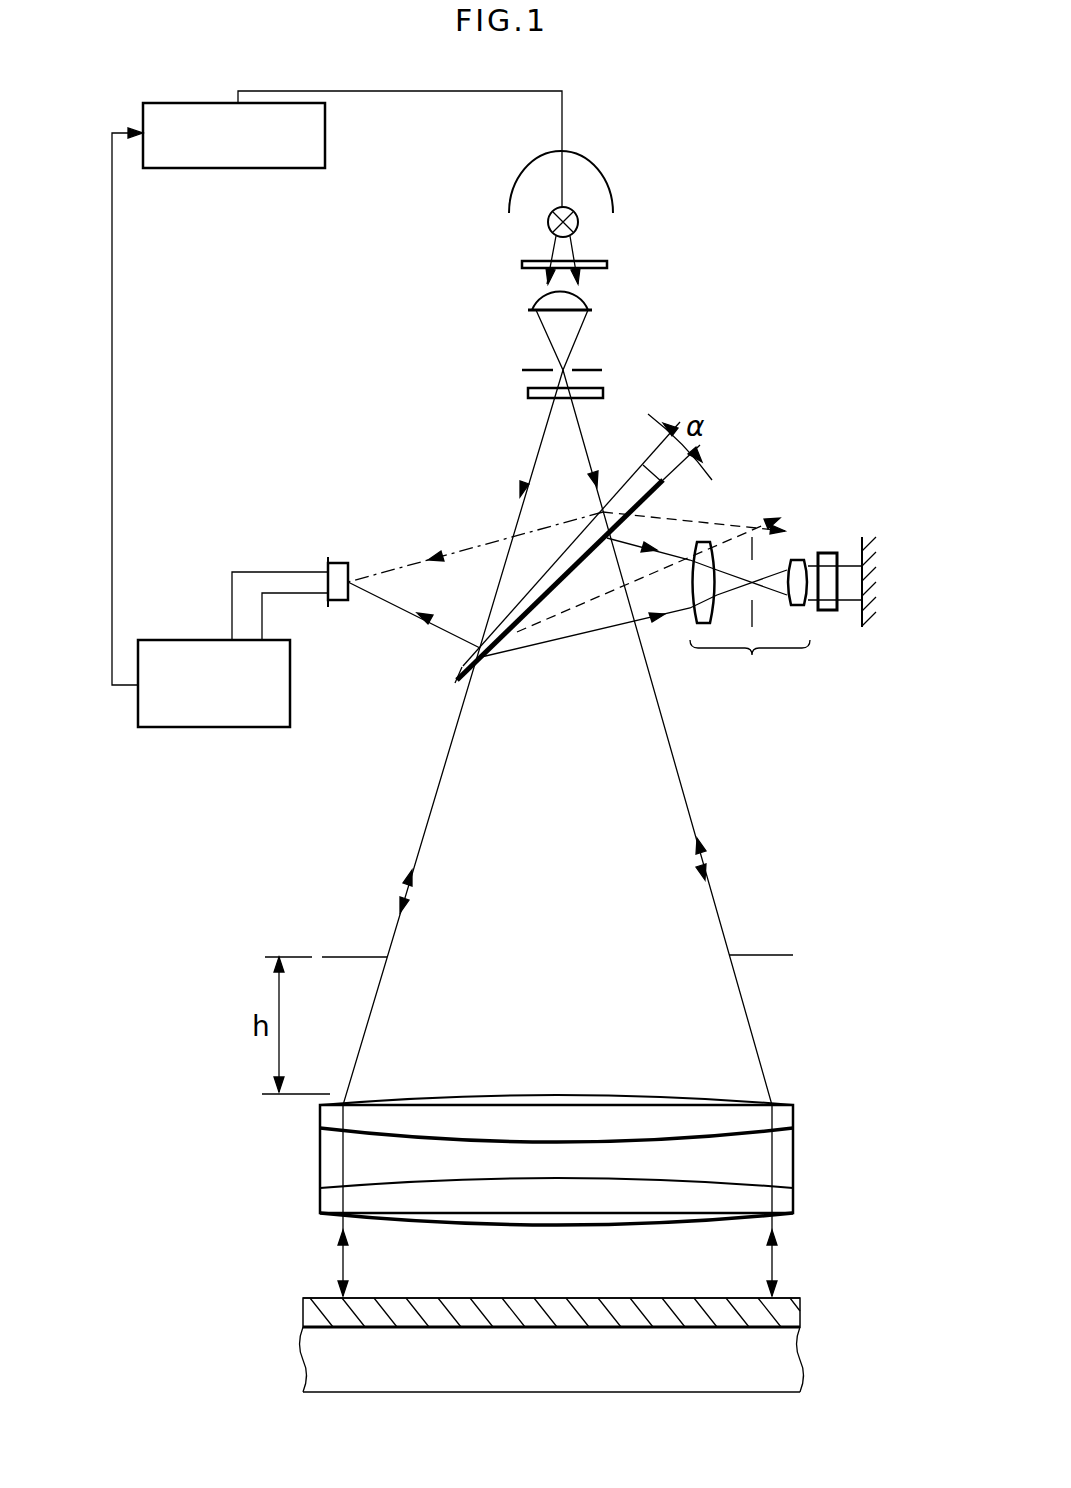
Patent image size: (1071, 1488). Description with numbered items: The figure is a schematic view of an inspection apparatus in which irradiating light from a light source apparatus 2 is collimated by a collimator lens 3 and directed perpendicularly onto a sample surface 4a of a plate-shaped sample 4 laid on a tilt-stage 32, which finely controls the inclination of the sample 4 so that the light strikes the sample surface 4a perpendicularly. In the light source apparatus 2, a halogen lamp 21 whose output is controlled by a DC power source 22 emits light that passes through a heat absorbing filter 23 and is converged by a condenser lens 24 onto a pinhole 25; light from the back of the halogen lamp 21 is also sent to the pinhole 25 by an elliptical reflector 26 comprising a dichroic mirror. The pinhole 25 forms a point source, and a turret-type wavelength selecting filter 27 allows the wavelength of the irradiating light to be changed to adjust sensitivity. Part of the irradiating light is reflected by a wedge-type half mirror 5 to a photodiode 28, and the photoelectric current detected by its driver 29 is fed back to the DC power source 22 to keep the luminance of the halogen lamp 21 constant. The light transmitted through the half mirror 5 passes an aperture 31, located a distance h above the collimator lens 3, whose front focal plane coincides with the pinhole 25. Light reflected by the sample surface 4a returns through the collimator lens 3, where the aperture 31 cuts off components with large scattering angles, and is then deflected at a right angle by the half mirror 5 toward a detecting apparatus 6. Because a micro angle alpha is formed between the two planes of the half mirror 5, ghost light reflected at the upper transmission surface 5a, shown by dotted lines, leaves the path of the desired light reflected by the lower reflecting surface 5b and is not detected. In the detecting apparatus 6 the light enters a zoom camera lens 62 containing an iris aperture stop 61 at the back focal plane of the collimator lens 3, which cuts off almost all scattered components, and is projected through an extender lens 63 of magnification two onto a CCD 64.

The light source apparatus 2 is at (628, 288).
The collimator lens 3 is at (780, 1162).
The plate-shaped sample 4 is at (790, 1312).
The sample surface 4a is at (325, 1298).
The wedge-type half mirror 5 is at (554, 551).
The upper transmission surface 5a is at (632, 478).
The lower reflecting surface 5b is at (648, 490).
The detecting apparatus 6 is at (850, 518).
The halogen lamp 21 is at (580, 222).
The DC power source 22 is at (303, 168).
The heat absorbing filter 23 is at (607, 262).
The condenser lens 24 is at (593, 308).
The pinhole 25 is at (595, 370).
The elliptical reflector 26 is at (608, 190).
The wavelength selecting filter 27 is at (527, 393).
The photodiode 28 is at (345, 563).
The driver 29 is at (277, 727).
The aperture 31 is at (778, 955).
The tilt-stage 32 is at (783, 1384).
The aperture stop 61 is at (755, 557).
The camera lens 62 is at (750, 617).
The extender lens 63 is at (828, 612).
The CCD 64 is at (856, 615).